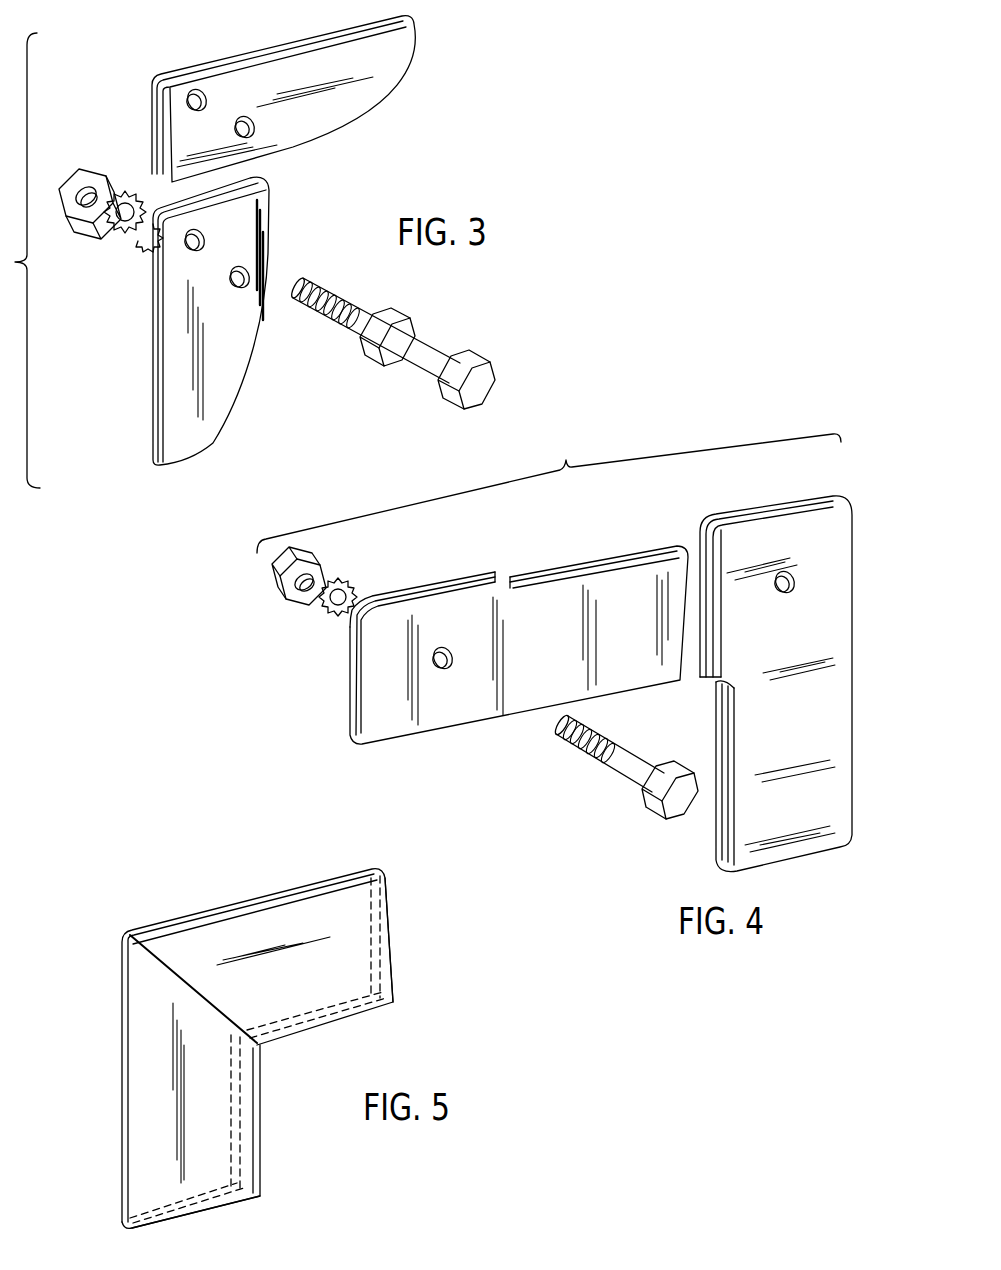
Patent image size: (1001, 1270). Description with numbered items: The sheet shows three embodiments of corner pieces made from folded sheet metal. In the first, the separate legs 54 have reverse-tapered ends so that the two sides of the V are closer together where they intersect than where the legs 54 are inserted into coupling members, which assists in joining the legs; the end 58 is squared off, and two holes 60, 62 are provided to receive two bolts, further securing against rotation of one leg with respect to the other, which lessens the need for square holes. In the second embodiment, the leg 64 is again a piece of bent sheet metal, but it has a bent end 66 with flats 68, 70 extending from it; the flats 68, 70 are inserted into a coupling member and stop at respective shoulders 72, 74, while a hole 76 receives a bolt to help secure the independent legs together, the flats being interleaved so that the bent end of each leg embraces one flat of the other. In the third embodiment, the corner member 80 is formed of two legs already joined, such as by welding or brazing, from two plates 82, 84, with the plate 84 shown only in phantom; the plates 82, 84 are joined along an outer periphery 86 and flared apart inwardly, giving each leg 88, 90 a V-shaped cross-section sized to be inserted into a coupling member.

In FIG. 3, the legs 54 is at (363, 110).
In FIG. 3, the end 58 is at (150, 95).
In FIG. 3, the hole 60 is at (197, 92).
In FIG. 3, the hole 62 is at (253, 130).
In FIG. 4, the leg 64 is at (427, 566).
In FIG. 4, the bent end 66 is at (350, 667).
In FIG. 4, the flat 68 is at (593, 555).
In FIG. 4, the flat 70 is at (643, 575).
In FIG. 4, the shoulder 72 is at (505, 562).
In FIG. 4, the shoulder 74 is at (512, 577).
In FIG. 4, the hole 76 is at (450, 665).
In FIG. 5, the corner member 80 is at (292, 876).
In FIG. 5, the plate 82 is at (395, 908).
In FIG. 5, the plate 84 is at (217, 993).
In FIG. 5, the outer periphery 86 is at (122, 1072).
In FIG. 5, the leg 88 is at (395, 973).
In FIG. 5, the leg 90 is at (220, 1210).